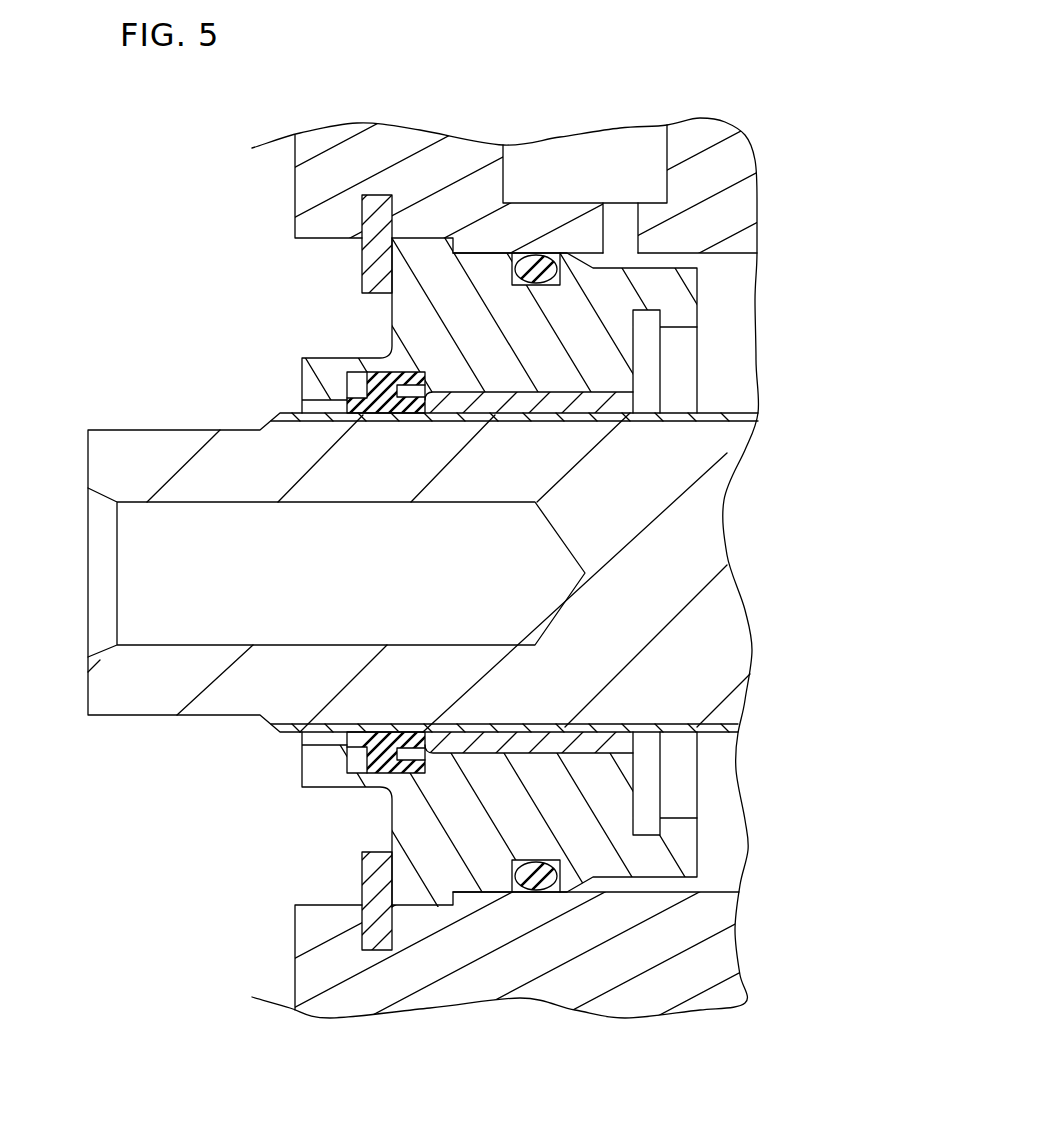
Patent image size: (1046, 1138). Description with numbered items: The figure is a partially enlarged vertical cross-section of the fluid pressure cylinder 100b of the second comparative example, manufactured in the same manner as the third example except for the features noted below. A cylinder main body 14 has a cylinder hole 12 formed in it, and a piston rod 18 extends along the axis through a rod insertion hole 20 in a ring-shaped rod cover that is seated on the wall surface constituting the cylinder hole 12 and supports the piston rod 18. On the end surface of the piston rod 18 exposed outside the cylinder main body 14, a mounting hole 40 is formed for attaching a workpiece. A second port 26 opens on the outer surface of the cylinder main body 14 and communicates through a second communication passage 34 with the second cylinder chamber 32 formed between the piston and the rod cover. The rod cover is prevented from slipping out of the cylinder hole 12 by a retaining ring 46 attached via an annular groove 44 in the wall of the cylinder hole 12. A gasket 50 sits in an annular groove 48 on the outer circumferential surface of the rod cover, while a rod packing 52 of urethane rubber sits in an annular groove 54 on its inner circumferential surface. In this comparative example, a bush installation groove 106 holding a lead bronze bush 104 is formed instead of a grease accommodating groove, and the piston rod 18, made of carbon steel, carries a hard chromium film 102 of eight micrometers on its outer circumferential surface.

The fluid pressure cylinder 100b is at (152, 113).
The cylinder hole 12 is at (325, 905).
The cylinder main body 14 is at (728, 949).
The piston rod 18 is at (700, 537).
The rod insertion hole 20 is at (317, 404).
The second port 26 is at (588, 160).
The second cylinder chamber 32 is at (726, 306).
The second communication passage 34 is at (622, 234).
The mounting hole 40 is at (140, 594).
The annular groove 44 is at (374, 197).
The retaining ring 46 is at (362, 263).
The annular groove 48 is at (548, 888).
The gasket 50 is at (548, 278).
The rod packing 52 is at (405, 378).
The annular groove 54 is at (388, 405).
The hard chromium film 102 is at (727, 418).
The lead bronze bush 104 is at (548, 406).
The bush installation groove 106 is at (510, 412).